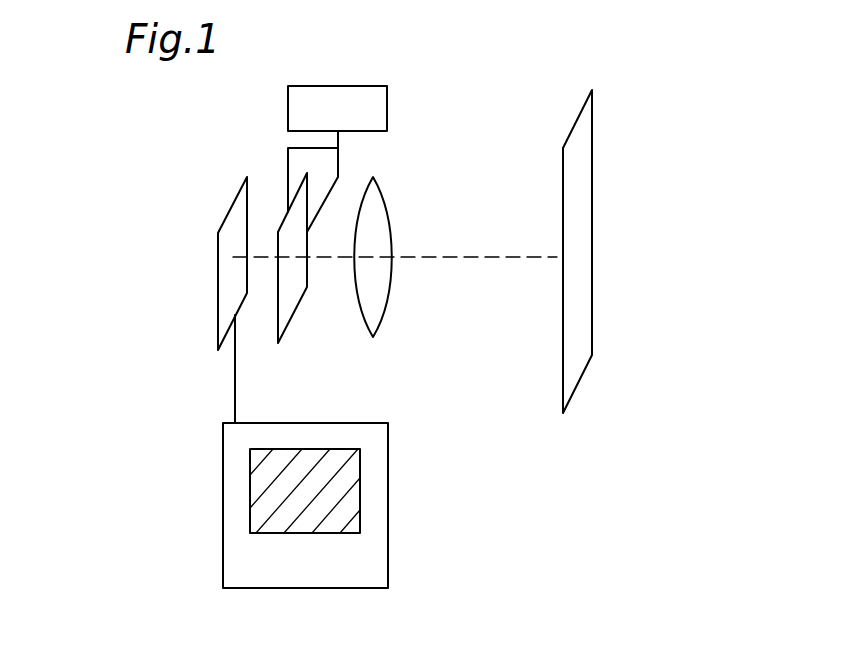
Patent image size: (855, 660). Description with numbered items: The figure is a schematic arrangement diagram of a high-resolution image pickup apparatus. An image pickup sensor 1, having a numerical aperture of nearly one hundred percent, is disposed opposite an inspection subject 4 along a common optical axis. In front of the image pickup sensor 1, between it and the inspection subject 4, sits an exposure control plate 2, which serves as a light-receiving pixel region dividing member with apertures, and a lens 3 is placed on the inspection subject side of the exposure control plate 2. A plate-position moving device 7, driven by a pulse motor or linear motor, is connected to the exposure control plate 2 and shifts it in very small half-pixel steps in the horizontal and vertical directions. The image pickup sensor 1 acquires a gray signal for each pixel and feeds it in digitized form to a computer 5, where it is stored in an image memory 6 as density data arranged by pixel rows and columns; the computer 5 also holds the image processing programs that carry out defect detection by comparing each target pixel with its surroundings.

The image pickup sensor 1 is at (218, 277).
The exposure control plate 2 is at (284, 217).
The lens 3 is at (388, 204).
The inspection subject 4 is at (592, 335).
The computer 5 is at (388, 542).
The image memory 6 is at (250, 497).
The plate-position moving device 7 is at (409, 97).